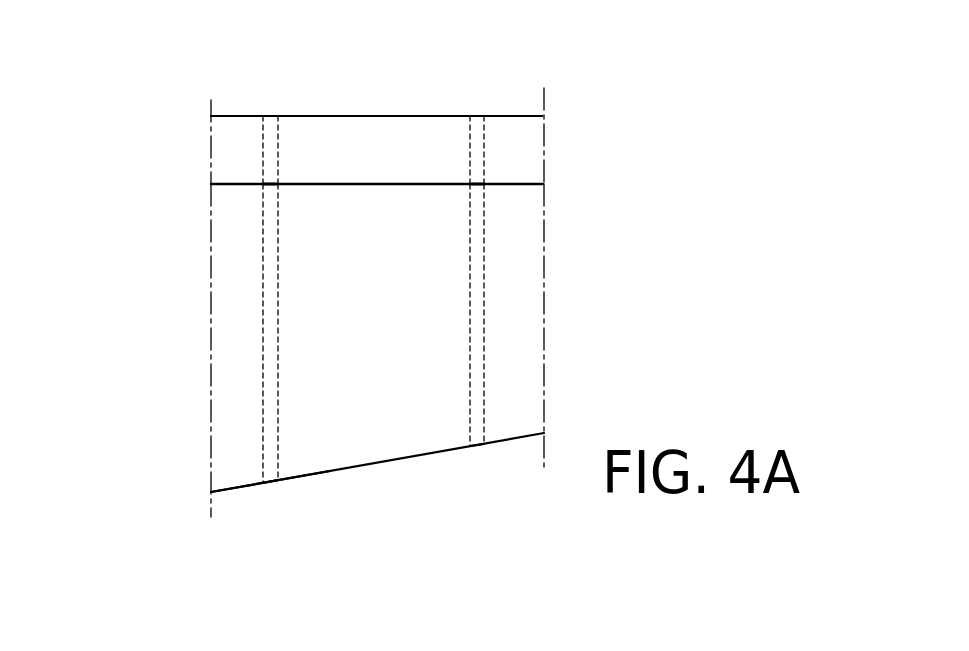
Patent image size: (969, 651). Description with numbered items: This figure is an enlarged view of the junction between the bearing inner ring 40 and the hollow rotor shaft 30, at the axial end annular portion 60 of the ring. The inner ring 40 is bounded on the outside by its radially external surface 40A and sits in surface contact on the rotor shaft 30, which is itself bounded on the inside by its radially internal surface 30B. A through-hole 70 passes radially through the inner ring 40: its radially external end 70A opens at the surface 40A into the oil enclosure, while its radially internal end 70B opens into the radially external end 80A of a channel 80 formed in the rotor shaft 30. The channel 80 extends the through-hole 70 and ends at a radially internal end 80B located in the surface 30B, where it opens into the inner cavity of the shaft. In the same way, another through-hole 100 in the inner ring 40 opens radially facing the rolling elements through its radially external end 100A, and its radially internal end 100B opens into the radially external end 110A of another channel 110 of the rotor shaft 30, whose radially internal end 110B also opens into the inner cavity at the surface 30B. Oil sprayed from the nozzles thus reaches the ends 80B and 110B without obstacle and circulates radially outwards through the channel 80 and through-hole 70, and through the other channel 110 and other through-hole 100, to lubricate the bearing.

The rotor shaft 30 is at (518, 270).
The radially internal surface of the rotor shaft 30B is at (230, 489).
The inner ring 40 is at (306, 121).
The axial end annular portion 60 is at (223, 140).
The radially external surface of the inner ring 40A is at (225, 116).
The through-hole 70 is at (277, 143).
The radially external end of the through-hole 70A is at (270, 116).
The radially internal end of the through-hole 70B is at (273, 184).
The channel 80 is at (262, 312).
The radially external end of the channel 80A is at (273, 184).
The radially internal end of the channel 80B is at (268, 480).
The other through-hole 100 is at (484, 143).
The radially external end of the other through-hole 100A is at (477, 116).
The radially internal end of the other through-hole 100B is at (476, 184).
The other channel 110 is at (485, 318).
The radially external end of the other channel 110A is at (476, 184).
The radially internal end of the other channel 110B is at (477, 443).